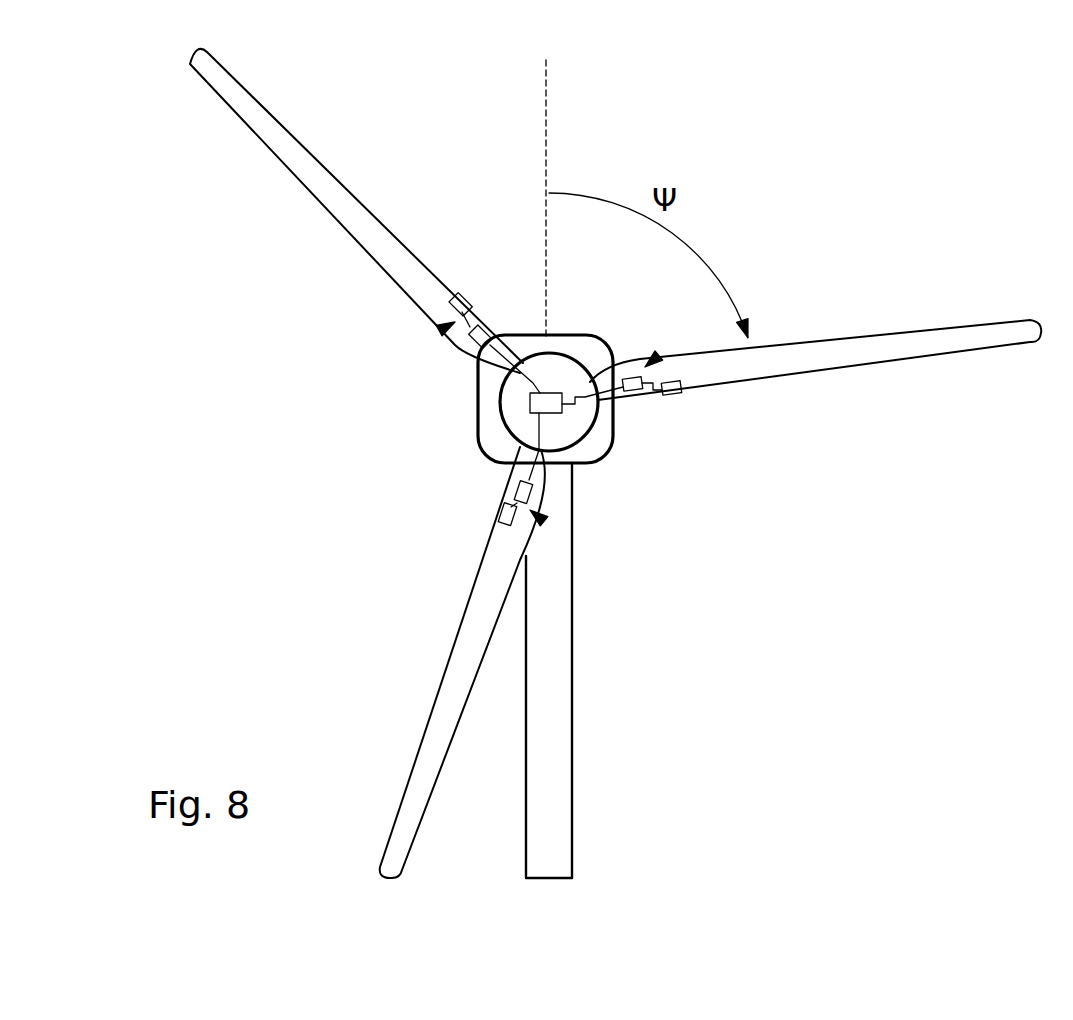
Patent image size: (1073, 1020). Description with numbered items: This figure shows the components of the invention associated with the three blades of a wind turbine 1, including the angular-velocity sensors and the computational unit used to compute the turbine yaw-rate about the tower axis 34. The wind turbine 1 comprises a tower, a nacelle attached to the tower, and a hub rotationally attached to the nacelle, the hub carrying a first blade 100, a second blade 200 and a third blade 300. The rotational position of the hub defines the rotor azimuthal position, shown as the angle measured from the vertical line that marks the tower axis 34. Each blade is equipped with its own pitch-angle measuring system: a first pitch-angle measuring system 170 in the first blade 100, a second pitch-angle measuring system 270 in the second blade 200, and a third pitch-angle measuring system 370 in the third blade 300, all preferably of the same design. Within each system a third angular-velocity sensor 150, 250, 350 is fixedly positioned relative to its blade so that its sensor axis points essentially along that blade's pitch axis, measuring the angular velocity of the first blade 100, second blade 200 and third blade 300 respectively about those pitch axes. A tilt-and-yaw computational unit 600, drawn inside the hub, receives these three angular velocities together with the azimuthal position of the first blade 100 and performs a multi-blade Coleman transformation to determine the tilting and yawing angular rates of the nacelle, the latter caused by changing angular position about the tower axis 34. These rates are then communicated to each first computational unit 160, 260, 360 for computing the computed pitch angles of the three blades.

The wind turbine 1 is at (752, 568).
The tower axis 34 is at (547, 125).
The first blade 100 is at (930, 329).
The third angular-velocity sensor 150 is at (672, 396).
The first computational unit 160 is at (633, 391).
The first pitch-angle measuring system 170 is at (660, 354).
The second blade 200 is at (284, 124).
The third angular-velocity sensor 250 is at (464, 296).
The first computational unit 260 is at (489, 334).
The second pitch-angle measuring system 270 is at (438, 331).
The third blade 300 is at (410, 770).
The third angular-velocity sensor 350 is at (498, 514).
The first computational unit 360 is at (515, 487).
The third pitch-angle measuring system 370 is at (543, 521).
The tilt-and-yaw computational unit 600 is at (531, 399).